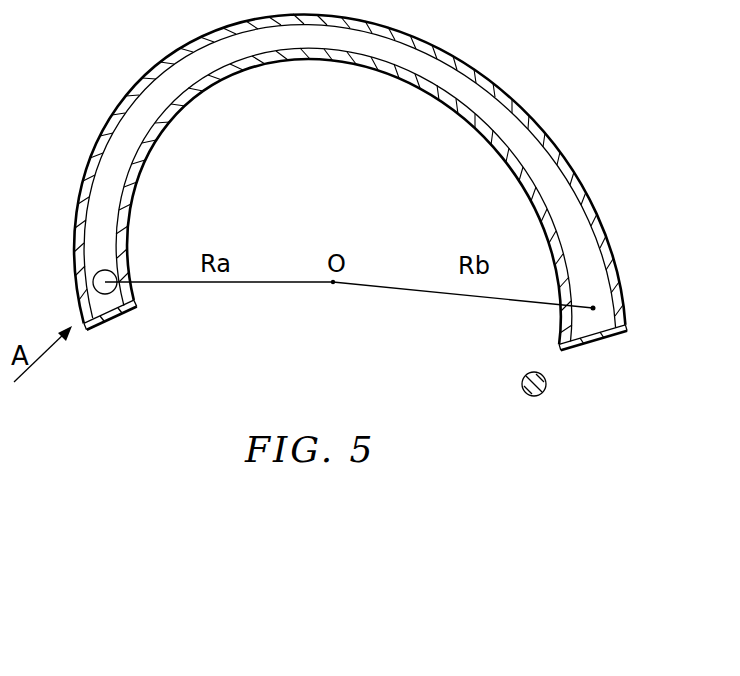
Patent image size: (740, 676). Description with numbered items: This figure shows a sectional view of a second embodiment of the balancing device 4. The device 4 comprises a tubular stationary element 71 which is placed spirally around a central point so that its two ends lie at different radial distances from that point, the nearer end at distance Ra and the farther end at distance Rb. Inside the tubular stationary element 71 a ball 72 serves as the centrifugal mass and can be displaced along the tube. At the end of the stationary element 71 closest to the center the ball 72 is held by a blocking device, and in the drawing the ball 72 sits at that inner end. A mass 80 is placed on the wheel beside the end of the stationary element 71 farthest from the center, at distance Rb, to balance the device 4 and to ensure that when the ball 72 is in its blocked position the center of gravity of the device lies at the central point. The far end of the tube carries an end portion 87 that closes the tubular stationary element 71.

The device 4 is at (353, 198).
The tubular stationary element 71 is at (566, 184).
The ball 72 is at (91, 284).
The mass 80 is at (533, 396).
The end cap 87 is at (600, 336).